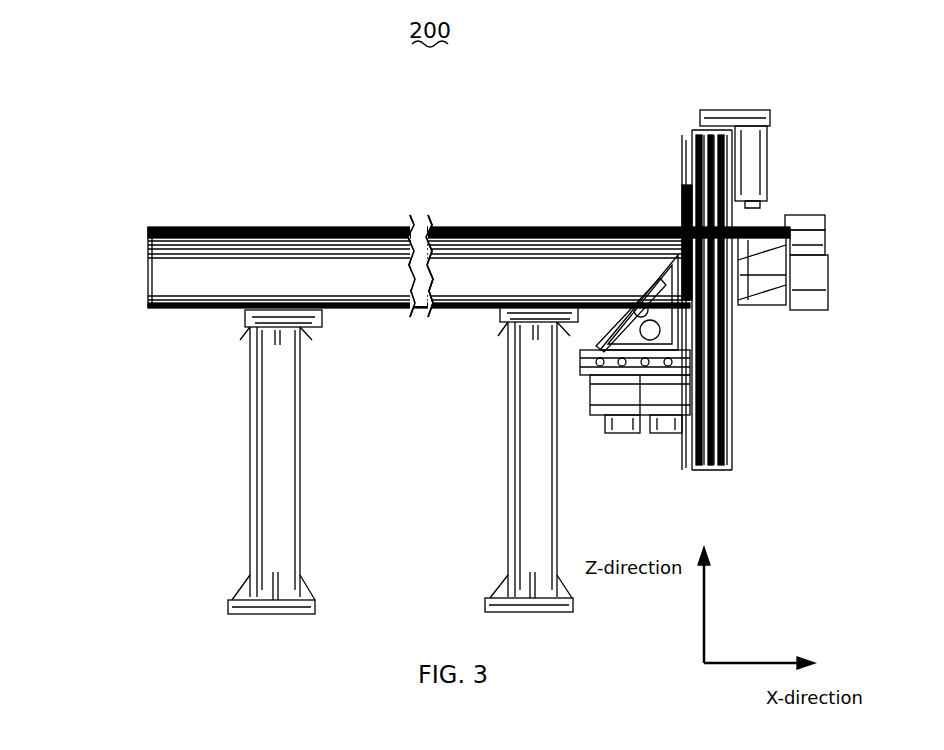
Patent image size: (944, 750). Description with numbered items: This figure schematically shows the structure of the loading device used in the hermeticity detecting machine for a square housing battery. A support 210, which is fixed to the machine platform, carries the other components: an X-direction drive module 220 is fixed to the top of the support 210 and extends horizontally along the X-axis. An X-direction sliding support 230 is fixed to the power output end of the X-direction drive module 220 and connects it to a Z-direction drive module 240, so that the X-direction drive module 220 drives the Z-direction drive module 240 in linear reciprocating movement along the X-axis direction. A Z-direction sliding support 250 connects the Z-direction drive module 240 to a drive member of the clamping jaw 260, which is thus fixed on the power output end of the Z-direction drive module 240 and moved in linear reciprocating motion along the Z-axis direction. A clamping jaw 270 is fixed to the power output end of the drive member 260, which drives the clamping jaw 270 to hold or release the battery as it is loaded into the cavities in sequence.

The support 210 is at (512, 418).
The X-direction drive module 220 is at (200, 225).
The X-direction sliding support 230 is at (770, 308).
The Z-direction drive module 240 is at (737, 430).
The Z-direction sliding support 250 is at (652, 298).
The drive member of clamping jaw 260 is at (585, 355).
The clamping jaw 270 is at (650, 433).